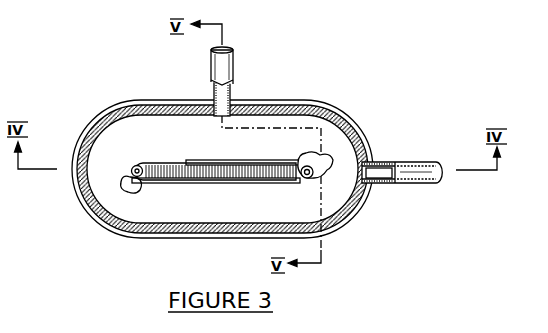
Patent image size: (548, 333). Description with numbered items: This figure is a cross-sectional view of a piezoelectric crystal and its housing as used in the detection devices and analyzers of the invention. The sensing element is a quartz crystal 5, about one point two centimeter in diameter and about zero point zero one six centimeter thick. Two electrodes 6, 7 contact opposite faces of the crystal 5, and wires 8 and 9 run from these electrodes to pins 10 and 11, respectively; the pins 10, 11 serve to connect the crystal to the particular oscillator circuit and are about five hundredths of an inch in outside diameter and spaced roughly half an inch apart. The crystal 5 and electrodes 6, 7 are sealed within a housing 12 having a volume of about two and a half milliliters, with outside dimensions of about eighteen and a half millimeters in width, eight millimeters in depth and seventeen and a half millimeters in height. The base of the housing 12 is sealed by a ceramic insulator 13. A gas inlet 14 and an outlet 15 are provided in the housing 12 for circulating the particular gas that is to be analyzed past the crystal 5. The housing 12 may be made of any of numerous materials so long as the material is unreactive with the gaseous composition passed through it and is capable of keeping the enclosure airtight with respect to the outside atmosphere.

The crystal 5 is at (160, 163).
The electrode 6 is at (199, 183).
The electrode 7 is at (199, 160).
The wire 8 is at (121, 188).
The wire 9 is at (331, 170).
The pin 10 is at (134, 164).
The pin 11 is at (308, 180).
The housing 12 is at (327, 113).
The ceramic insulator 13 is at (361, 128).
The gas inlet 14 is at (418, 184).
The outlet 15 is at (228, 66).